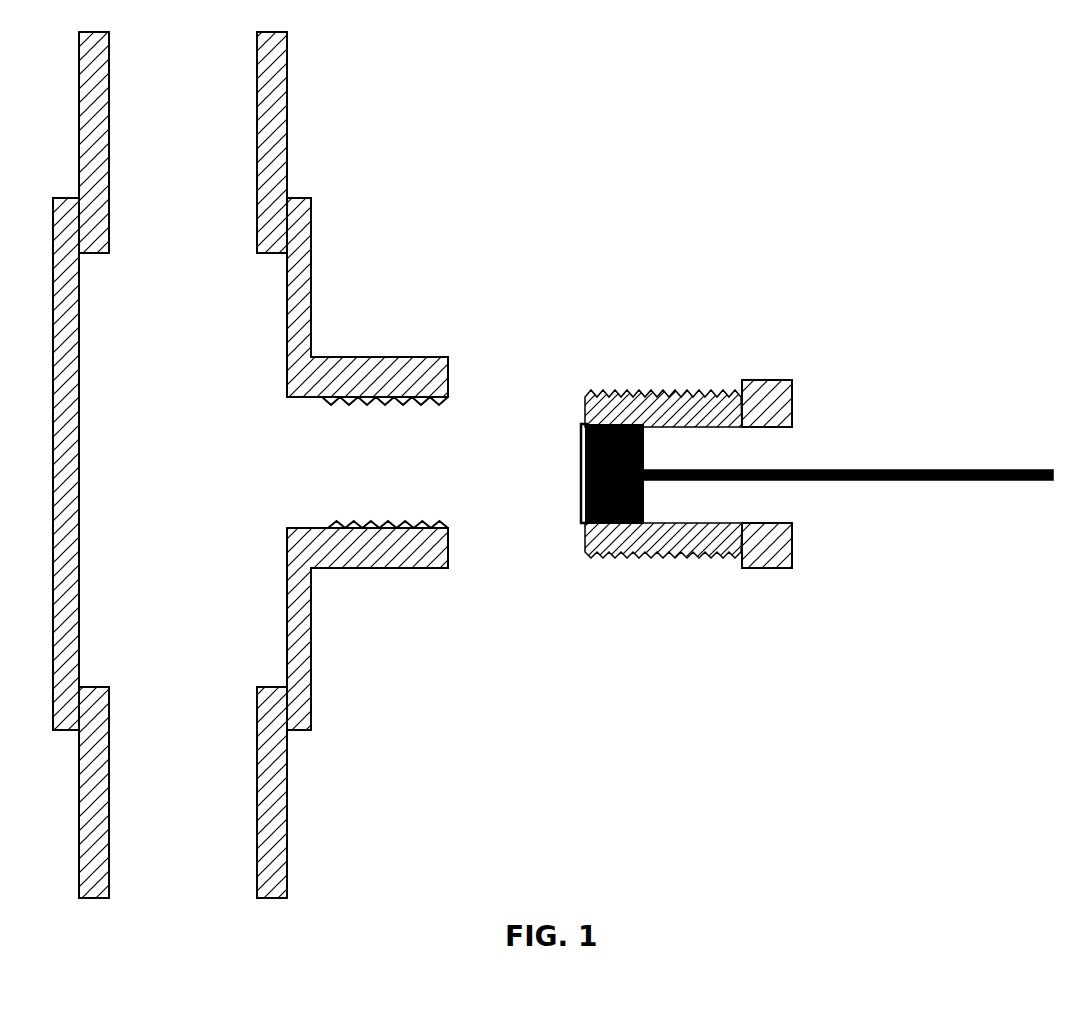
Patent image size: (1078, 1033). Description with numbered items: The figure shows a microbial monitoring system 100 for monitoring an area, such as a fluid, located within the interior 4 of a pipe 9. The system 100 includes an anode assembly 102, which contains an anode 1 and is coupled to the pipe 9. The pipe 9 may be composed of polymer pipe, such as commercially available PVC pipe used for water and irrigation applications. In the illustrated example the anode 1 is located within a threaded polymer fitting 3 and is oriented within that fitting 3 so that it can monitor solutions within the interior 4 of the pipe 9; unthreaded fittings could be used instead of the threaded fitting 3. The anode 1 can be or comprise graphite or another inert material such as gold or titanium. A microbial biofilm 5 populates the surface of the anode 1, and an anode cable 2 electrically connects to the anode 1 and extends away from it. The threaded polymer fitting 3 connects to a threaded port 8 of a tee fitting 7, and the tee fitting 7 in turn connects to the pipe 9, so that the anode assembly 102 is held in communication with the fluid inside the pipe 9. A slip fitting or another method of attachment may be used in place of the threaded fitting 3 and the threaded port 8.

The microbial monitoring system 100 is at (446, 72).
The anode assembly 102 is at (706, 314).
The anode 1 is at (617, 437).
The anode cable 2 is at (960, 470).
The threaded fitting 3 is at (777, 379).
The interior 4 is at (178, 450).
The microbial biofilm 5 is at (581, 496).
The tee fitting 7 is at (312, 321).
The threaded port 8 is at (410, 406).
The pipe 9 is at (286, 126).